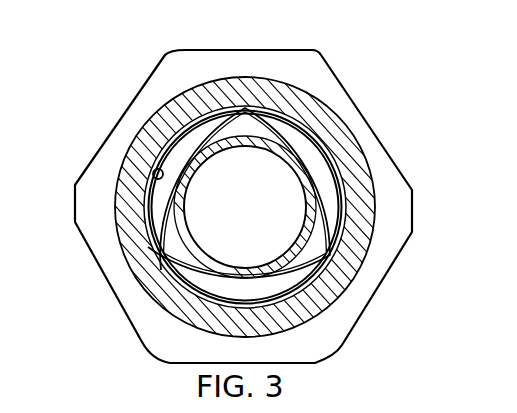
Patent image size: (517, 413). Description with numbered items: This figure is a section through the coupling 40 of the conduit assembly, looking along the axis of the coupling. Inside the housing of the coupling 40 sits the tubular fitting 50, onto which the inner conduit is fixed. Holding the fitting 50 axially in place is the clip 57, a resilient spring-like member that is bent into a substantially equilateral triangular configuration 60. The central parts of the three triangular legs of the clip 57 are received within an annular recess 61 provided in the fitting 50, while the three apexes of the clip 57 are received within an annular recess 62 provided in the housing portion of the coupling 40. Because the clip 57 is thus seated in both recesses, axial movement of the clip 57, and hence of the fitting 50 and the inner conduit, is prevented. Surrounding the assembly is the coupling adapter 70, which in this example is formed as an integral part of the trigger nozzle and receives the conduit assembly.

The coupling 40 is at (309, 87).
The fitting 50 is at (268, 143).
The clip 57 is at (204, 135).
The triangular configuration 60 is at (308, 164).
The annular recess 61 is at (190, 252).
The annular recess 62 is at (153, 172).
The coupling adapter 70 is at (390, 268).